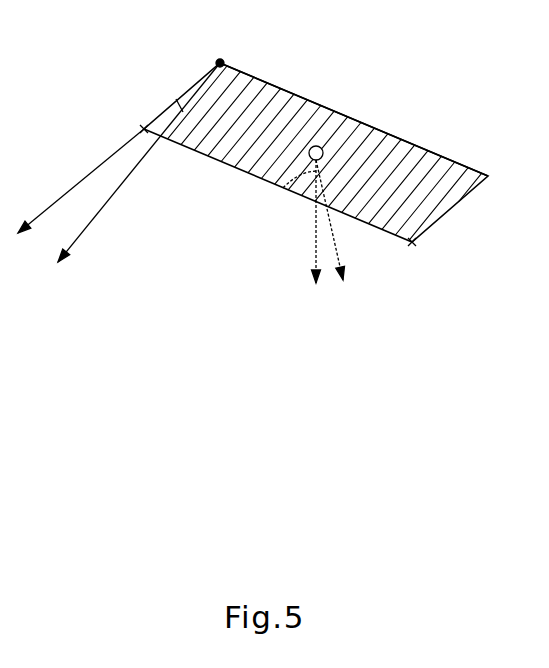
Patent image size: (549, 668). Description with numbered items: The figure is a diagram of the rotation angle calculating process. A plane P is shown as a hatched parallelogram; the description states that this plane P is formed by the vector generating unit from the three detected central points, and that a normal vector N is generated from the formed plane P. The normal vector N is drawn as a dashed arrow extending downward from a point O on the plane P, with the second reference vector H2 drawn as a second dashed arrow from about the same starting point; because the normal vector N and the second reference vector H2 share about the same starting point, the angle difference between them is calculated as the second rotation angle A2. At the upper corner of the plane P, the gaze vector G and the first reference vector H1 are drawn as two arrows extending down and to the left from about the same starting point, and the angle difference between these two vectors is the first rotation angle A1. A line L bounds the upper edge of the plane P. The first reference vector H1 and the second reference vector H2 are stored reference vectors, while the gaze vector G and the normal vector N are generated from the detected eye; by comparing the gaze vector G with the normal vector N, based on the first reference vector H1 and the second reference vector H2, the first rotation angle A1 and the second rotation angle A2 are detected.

The plane P is at (314, 152).
The line L is at (366, 128).
The gaze vector G is at (81, 181).
The first reference vector H1 is at (139, 162).
The first rotation angle A1 is at (182, 93).
The point O is at (316, 153).
The normal vector N is at (310, 221).
The second reference vector H2 is at (339, 220).
The second rotation angle A2 is at (283, 188).